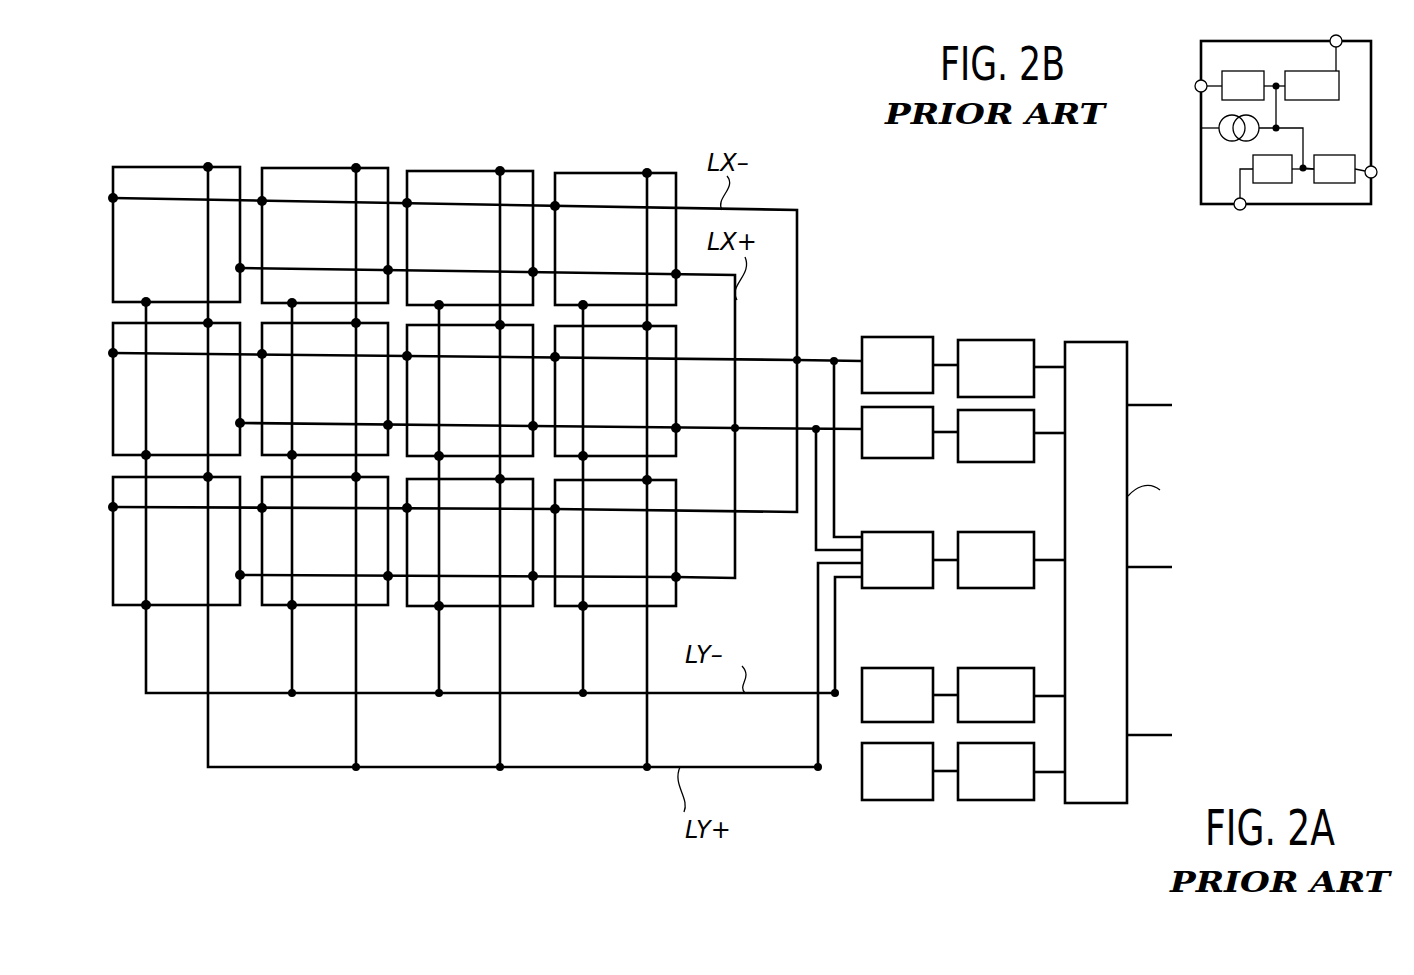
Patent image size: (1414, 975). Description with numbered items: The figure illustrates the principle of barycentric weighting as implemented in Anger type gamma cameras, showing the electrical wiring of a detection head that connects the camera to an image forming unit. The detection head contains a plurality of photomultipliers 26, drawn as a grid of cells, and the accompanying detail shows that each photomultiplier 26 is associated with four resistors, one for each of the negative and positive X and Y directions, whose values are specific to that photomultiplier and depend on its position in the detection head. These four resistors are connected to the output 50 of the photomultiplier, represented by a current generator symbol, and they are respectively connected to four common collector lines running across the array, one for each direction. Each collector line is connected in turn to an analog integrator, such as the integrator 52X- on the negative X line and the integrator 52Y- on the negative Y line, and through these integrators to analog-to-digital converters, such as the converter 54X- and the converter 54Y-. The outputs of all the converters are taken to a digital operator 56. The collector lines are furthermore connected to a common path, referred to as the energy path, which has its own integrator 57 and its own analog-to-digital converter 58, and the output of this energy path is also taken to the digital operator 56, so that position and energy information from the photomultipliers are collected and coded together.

In FIG. 2A, the photomultiplier 26 is at (300, 165).
In FIG. 2B, the photomultiplier 26 is at (1201, 52).
In FIG. 2B, the output of the photomultiplier 50 is at (1218, 126).
In FIG. 2A, the analog integrator 52X- is at (887, 340).
In FIG. 2A, the analog integrator 52Y- is at (888, 680).
In FIG. 2A, the analog-to-digital converter 54X- is at (995, 340).
In FIG. 2A, the analog-to-digital converter 54Y- is at (985, 680).
In FIG. 2A, the digital operator 56 is at (1128, 632).
In FIG. 2A, the integrator 57 is at (902, 532).
In FIG. 2A, the analog-to-digital converter 58 is at (1010, 530).